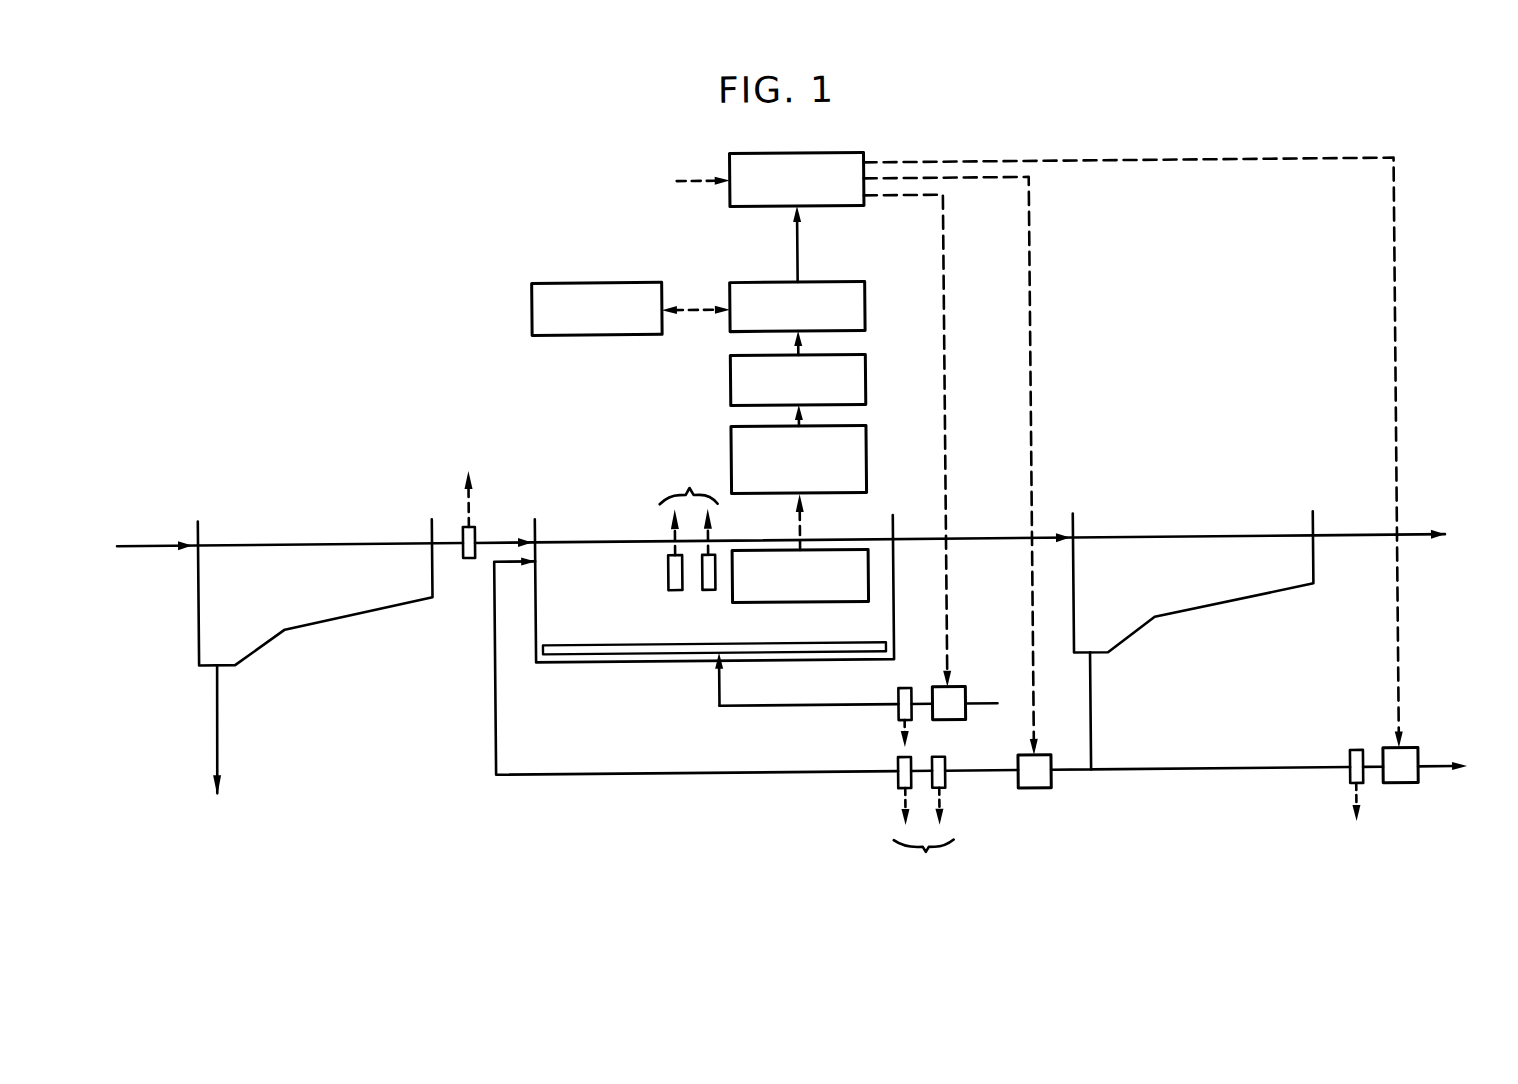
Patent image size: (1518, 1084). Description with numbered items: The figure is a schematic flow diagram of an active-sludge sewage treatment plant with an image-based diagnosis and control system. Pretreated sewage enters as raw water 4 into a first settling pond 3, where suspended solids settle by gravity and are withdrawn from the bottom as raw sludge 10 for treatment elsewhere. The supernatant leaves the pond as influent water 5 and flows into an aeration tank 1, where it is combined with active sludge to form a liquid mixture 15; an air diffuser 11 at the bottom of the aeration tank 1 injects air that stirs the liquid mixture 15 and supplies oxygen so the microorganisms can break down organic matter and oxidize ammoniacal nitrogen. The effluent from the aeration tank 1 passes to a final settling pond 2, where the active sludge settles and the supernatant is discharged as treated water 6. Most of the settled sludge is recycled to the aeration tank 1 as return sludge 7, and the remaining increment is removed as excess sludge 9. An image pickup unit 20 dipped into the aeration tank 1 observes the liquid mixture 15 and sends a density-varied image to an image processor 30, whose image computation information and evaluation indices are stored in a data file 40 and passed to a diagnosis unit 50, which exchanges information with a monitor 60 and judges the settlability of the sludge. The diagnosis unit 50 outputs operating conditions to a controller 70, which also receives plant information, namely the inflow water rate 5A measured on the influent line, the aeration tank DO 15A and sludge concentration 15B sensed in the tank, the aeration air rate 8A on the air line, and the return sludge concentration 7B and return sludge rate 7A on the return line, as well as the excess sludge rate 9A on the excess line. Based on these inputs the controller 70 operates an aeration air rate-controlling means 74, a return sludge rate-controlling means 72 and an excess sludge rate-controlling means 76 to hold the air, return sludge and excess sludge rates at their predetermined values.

The aeration tank 1 is at (585, 663).
The final settling pond 2 is at (1185, 614).
The first settling pond 3 is at (303, 626).
The raw water 4 is at (147, 540).
The influent water 5 is at (501, 539).
The inflow water rate 5A is at (469, 558).
The treated water 6 is at (1351, 539).
The return sludge 7 is at (590, 775).
The return sludge rate 7A is at (946, 782).
The return sludge concentration 7B is at (894, 782).
The aeration air rate 8A is at (894, 700).
The excess sludge 9 is at (1236, 775).
The excess sludge rate 9A is at (1355, 752).
The raw sludge 10 is at (218, 742).
The air diffuser 11 is at (576, 643).
The liquid mixture 15 is at (656, 561).
The aeration tank DO 15A is at (666, 571).
The sludge concentration 15B is at (709, 590).
The image pickup unit 20 is at (800, 604).
The image processor 30 is at (870, 452).
The data file 40 is at (870, 377).
The diagnosis unit 50 is at (870, 305).
The monitor 60 is at (530, 302).
The controller 70 is at (850, 206).
The return sludge rate-controlling means 72 is at (1050, 790).
The aeration air rate-controlling means 74 is at (966, 690).
The excess sludge rate-controlling means 76 is at (1405, 750).